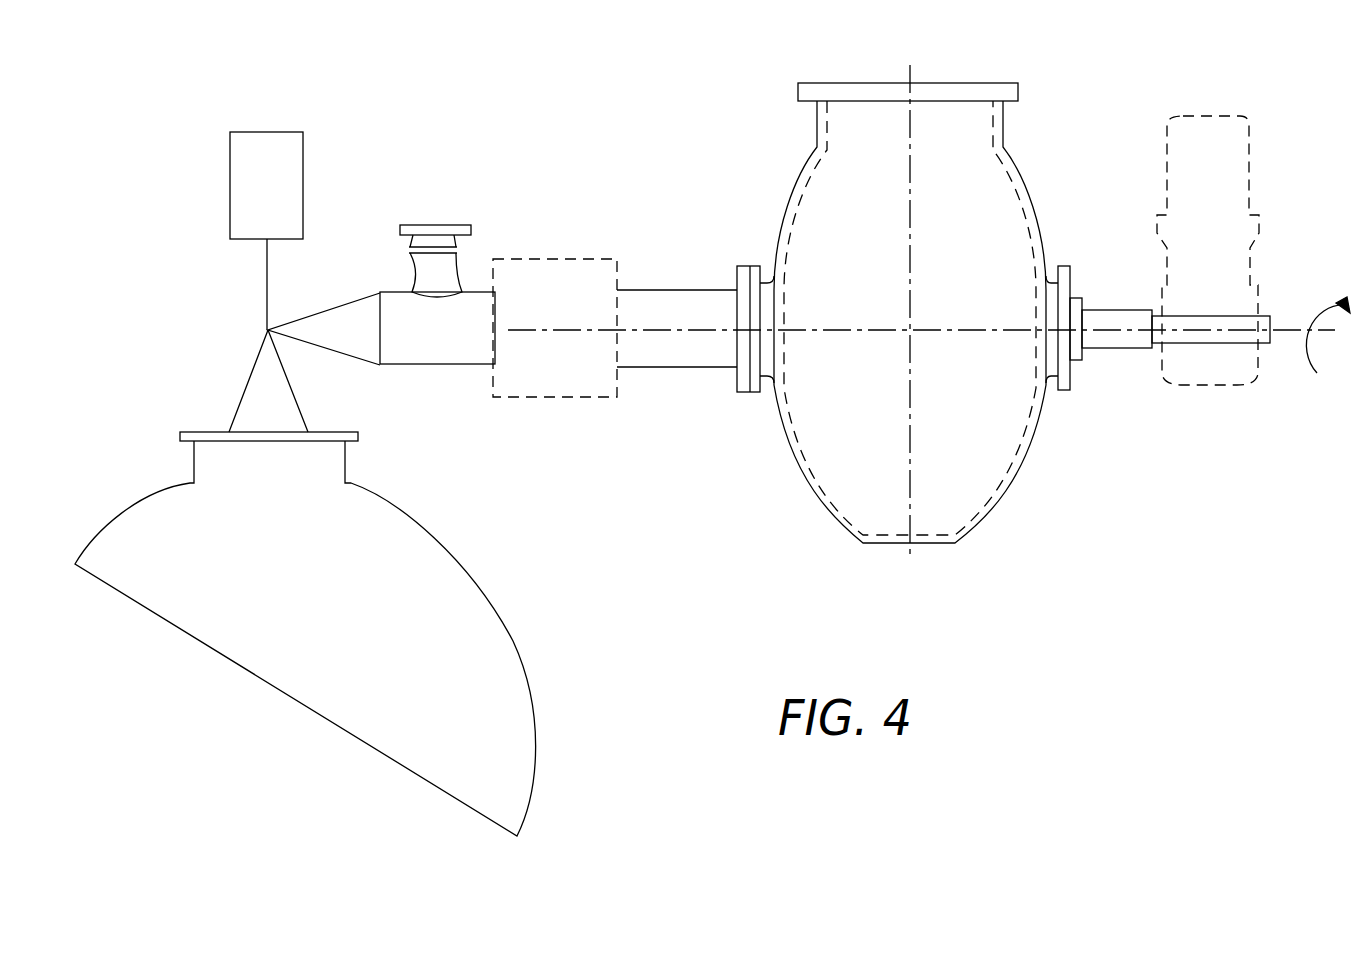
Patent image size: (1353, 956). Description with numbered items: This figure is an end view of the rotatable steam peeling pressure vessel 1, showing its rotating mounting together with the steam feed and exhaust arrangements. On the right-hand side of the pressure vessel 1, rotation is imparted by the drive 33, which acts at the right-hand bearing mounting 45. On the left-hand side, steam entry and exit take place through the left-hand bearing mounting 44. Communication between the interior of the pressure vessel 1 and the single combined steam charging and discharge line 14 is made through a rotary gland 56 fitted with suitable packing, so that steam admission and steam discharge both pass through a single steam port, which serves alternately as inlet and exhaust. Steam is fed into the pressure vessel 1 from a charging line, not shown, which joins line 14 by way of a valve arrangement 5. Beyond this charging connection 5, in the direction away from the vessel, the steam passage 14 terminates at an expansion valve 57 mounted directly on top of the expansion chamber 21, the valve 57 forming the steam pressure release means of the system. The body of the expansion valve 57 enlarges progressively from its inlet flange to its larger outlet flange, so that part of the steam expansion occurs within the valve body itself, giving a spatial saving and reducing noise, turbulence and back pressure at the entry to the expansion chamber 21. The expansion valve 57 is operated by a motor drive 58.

The pressure vessel 1 is at (1008, 503).
The valve arrangement 5 is at (436, 243).
The steam charging and discharge line 14 is at (657, 300).
The expansion chamber 21 is at (500, 658).
The drive 33 is at (1183, 197).
The left-hand bearing mounting 44 is at (740, 394).
The right-hand bearing mounting 45 is at (1065, 391).
The rotary gland 56 is at (578, 388).
The expansion valve 57 is at (258, 395).
The motor drive 58 is at (242, 171).